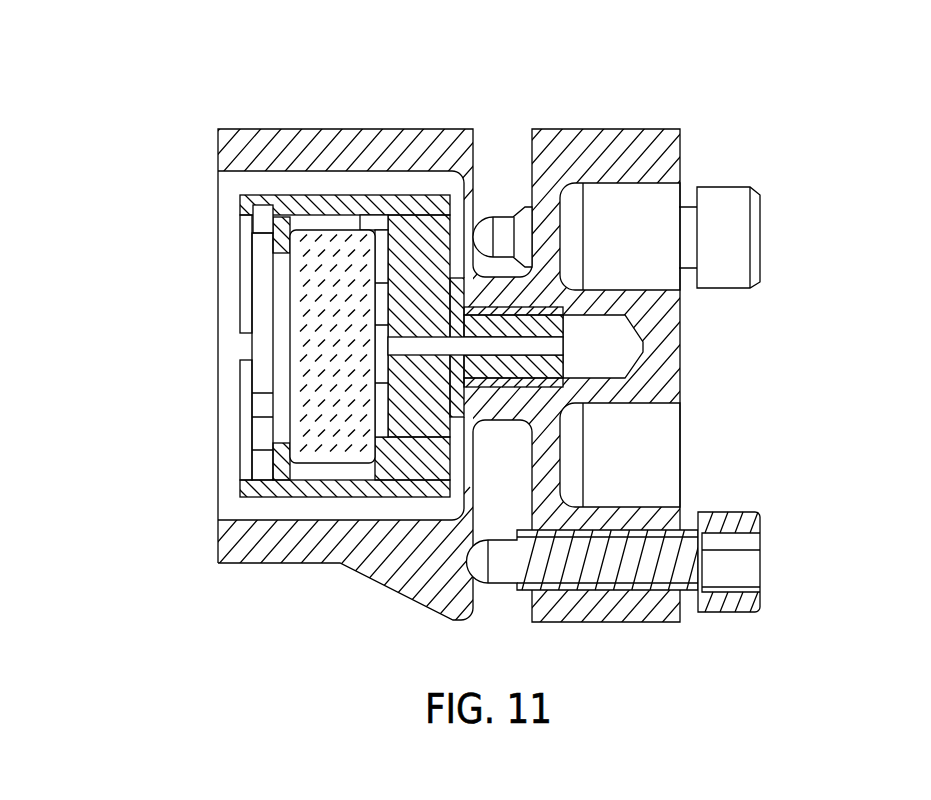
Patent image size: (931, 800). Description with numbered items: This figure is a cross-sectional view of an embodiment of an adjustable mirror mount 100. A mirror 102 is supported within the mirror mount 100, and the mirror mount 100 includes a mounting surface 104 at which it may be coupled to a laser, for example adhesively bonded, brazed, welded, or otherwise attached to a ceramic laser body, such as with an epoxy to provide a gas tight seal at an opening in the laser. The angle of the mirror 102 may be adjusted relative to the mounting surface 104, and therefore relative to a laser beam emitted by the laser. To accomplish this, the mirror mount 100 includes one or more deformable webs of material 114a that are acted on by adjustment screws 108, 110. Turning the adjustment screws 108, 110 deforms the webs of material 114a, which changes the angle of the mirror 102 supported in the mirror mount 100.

The adjustable mirror mount 100 is at (158, 111).
The mirror 102 is at (290, 343).
The mounting surface 104 is at (219, 542).
The adjustment screw 108 is at (757, 512).
The adjustment screw 110 is at (757, 196).
The deformable web of material 114a is at (473, 208).